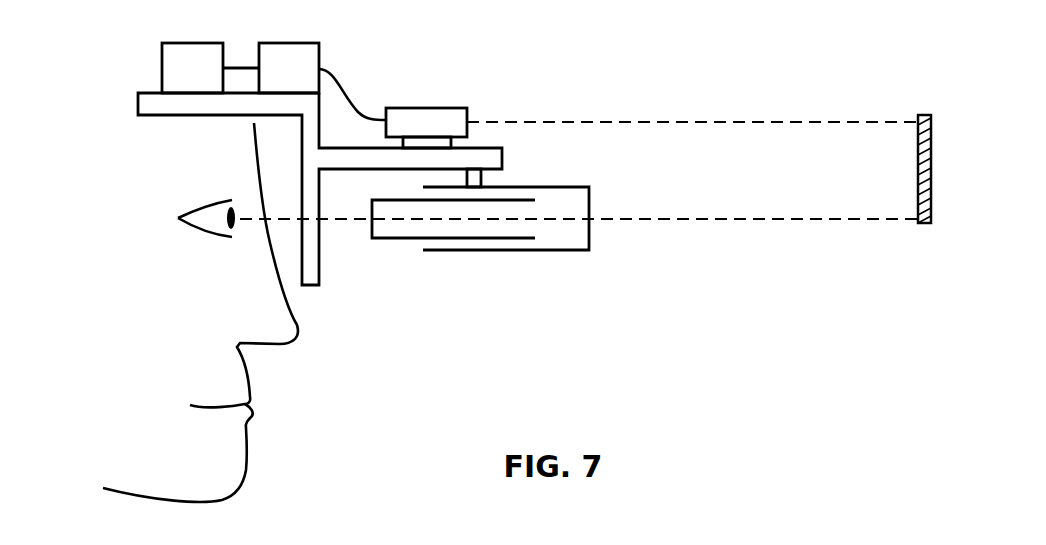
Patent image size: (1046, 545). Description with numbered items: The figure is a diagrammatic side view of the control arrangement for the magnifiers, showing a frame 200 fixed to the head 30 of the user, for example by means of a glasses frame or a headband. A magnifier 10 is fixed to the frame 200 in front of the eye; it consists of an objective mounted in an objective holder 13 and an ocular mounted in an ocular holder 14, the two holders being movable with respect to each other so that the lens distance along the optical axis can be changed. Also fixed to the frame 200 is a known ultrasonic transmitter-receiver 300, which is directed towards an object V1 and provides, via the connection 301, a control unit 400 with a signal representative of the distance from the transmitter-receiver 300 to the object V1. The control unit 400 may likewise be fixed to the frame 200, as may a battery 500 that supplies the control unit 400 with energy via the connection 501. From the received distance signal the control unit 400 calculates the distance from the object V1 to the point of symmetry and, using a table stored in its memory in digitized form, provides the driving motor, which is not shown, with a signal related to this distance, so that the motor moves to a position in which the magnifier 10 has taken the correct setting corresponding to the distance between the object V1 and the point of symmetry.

The magnifier 10 is at (479, 277).
The objective holder 13 is at (523, 250).
The ocular holder 14 is at (394, 238).
The head 30 is at (152, 296).
The frame 200 is at (162, 106).
The ultrasonic transmitter-receiver 300 is at (437, 117).
The connection 301 is at (352, 95).
The control unit 400 is at (289, 68).
The battery 500 is at (192, 68).
The connection 501 is at (236, 67).
The object V1 is at (941, 169).